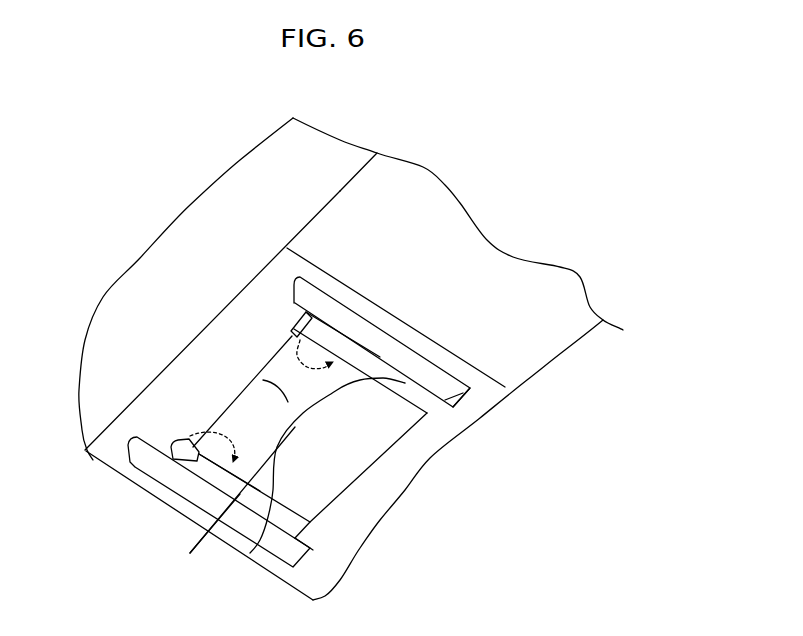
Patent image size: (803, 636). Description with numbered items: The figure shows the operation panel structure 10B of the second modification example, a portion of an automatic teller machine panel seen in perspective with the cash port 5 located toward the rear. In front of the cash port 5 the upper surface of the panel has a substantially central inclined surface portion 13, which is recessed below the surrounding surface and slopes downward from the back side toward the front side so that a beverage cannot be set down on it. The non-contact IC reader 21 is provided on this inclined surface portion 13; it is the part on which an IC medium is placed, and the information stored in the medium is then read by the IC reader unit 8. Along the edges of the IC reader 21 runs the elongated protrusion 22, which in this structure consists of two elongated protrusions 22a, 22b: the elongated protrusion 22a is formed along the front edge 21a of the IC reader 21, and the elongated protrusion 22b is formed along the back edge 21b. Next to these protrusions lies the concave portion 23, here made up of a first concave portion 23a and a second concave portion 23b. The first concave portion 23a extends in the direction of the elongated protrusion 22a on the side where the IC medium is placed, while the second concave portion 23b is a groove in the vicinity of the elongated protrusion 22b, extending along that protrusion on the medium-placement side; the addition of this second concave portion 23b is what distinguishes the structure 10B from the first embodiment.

The operation panel structure 10B is at (168, 292).
The cash port 5 is at (360, 227).
The inclined surface portion 13 is at (262, 297).
The IC reader unit 8 is at (250, 553).
The non-contact IC reader 21 is at (260, 380).
The front edge 21a is at (200, 438).
The back edge 21b is at (297, 347).
The elongated protrusion 22 is at (502, 506).
The elongated protrusion 22a is at (303, 545).
The elongated protrusion 22b is at (462, 395).
The concave portion 23 is at (133, 499).
The first concave portion 23a is at (186, 517).
The second concave portion 23b is at (190, 553).